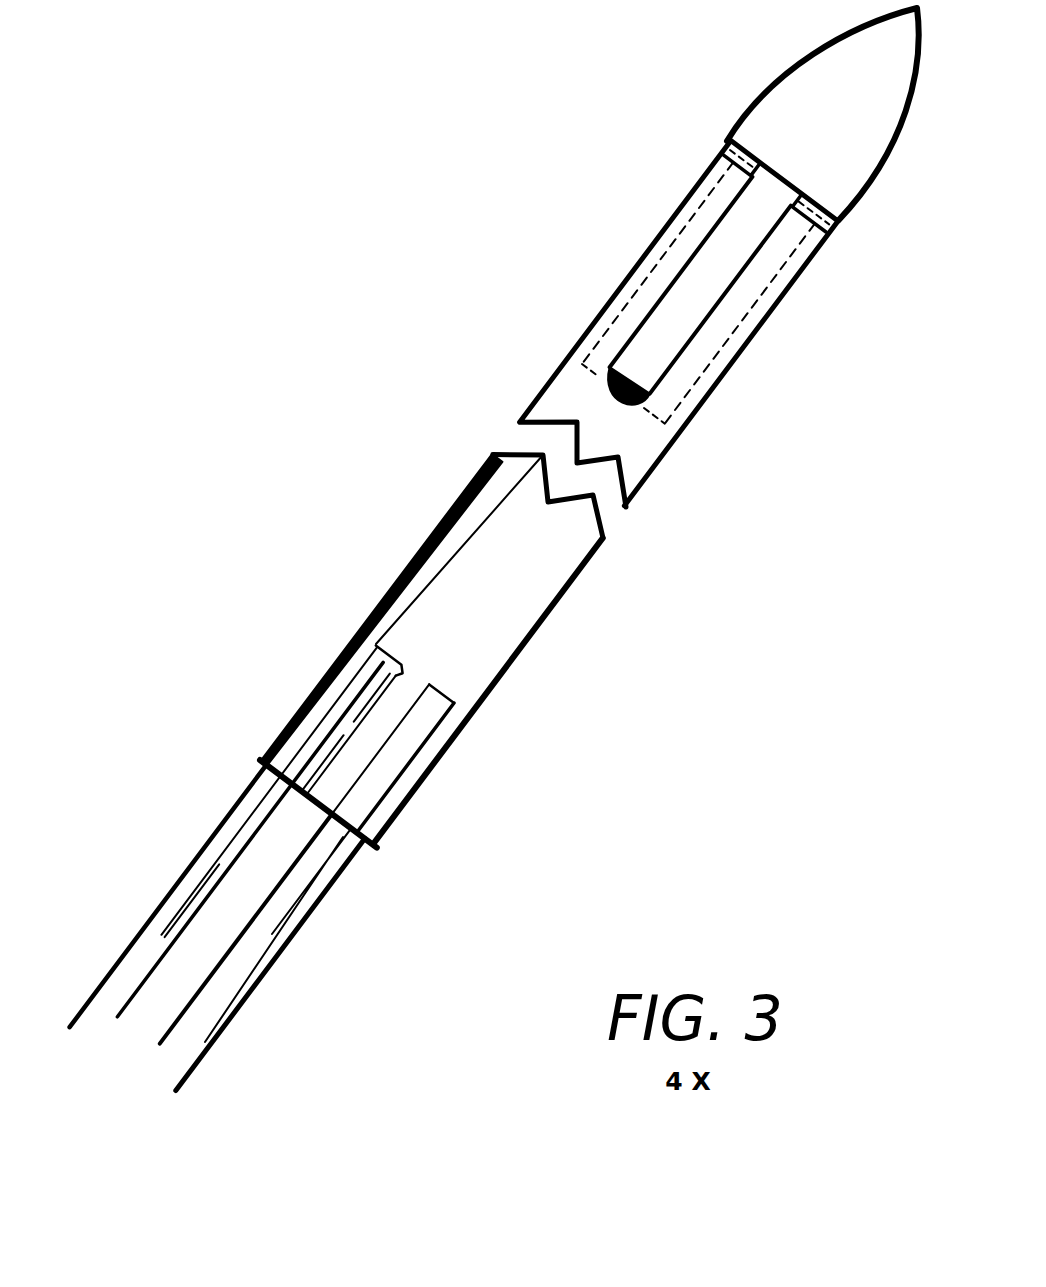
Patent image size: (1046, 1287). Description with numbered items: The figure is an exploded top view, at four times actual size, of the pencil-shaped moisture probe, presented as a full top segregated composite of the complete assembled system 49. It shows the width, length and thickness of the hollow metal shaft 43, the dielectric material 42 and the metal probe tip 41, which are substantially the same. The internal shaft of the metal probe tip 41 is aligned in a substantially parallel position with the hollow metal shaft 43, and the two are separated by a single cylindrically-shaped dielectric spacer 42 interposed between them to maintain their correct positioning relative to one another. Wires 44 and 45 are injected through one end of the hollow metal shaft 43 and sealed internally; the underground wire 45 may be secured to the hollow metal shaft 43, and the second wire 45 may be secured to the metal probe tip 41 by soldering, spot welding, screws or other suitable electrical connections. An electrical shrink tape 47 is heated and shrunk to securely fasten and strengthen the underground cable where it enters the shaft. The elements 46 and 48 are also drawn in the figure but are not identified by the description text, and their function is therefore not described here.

The metal probe tip 41 is at (777, 80).
The dielectric spacer 42 is at (665, 258).
The hollow metal shaft 43 is at (551, 376).
The wire 44 is at (596, 414).
The second wire 45 is at (570, 552).
The channel 46 is at (376, 645).
The electrical shrink tape 47 is at (352, 758).
The stem 48 is at (224, 925).
The complete assembled system 49 is at (396, 13).